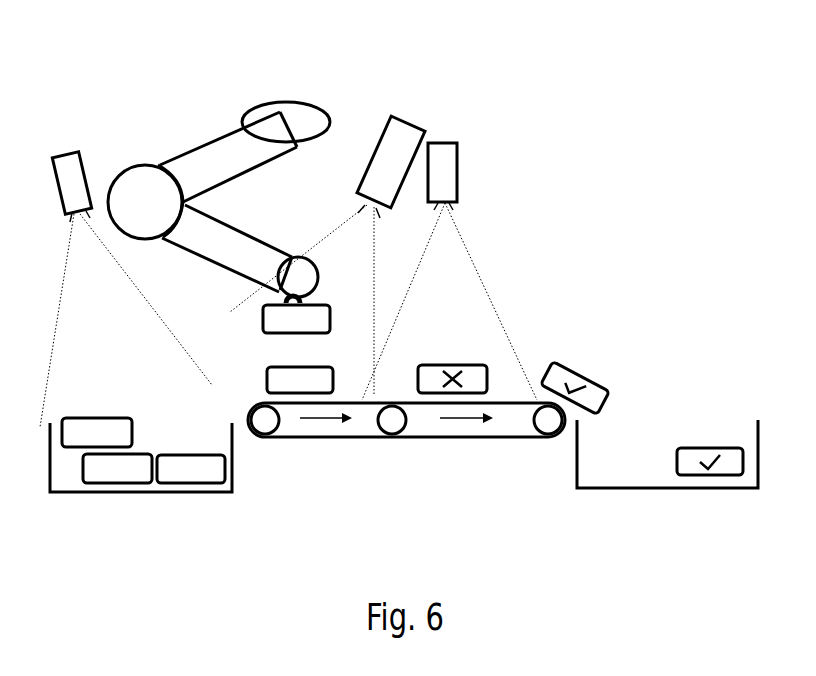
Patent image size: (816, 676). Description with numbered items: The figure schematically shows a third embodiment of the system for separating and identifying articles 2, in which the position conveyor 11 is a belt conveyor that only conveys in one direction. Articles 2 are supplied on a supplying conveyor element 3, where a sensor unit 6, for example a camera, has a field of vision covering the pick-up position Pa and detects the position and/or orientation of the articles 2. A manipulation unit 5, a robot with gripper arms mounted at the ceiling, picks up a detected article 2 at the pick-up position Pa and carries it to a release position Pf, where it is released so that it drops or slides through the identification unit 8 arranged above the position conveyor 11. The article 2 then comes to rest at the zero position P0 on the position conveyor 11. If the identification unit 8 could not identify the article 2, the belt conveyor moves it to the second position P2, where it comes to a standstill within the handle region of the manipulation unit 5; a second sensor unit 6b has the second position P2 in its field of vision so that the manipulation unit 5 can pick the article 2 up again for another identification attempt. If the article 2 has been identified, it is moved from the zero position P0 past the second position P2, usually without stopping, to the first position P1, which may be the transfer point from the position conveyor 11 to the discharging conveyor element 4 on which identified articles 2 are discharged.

The article 2 is at (193, 473).
The supplying conveyor element 3 is at (208, 493).
The discharging conveyor element 4 is at (607, 490).
The manipulation unit 5 is at (260, 102).
The sensor unit 6 is at (62, 150).
The second sensor unit 6b is at (457, 167).
The identification unit 8 is at (410, 120).
The position conveyor 11 is at (437, 438).
The pick-up position Pa is at (146, 390).
The zero position P0 is at (240, 353).
The release position Pf is at (321, 223).
The first position P1 is at (544, 340).
The second position P2 is at (461, 351).